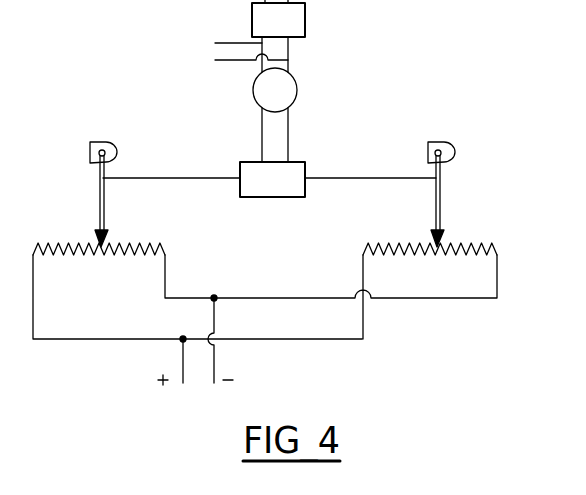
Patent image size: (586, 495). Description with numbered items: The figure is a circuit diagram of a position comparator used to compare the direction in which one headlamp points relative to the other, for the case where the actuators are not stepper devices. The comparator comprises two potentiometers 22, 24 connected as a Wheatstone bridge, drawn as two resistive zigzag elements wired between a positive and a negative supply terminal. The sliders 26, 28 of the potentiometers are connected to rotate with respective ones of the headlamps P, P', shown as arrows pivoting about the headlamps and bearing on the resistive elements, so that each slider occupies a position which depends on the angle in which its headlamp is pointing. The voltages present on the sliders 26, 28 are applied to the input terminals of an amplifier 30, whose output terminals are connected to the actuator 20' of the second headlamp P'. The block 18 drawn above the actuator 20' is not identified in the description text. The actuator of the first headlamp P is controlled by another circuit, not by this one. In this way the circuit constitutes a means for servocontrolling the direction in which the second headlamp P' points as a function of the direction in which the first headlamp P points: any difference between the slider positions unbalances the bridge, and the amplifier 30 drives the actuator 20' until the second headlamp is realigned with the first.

The drive motor 18 is at (278, 18).
The actuator 20' is at (305, 83).
The amplifier 30 is at (264, 186).
The potentiometer 22 is at (133, 245).
The potentiometer 24 is at (400, 245).
The slider 26 is at (98, 208).
The slider 28 is at (443, 215).
The headlamp P is at (80, 141).
The headlamp P' is at (471, 136).